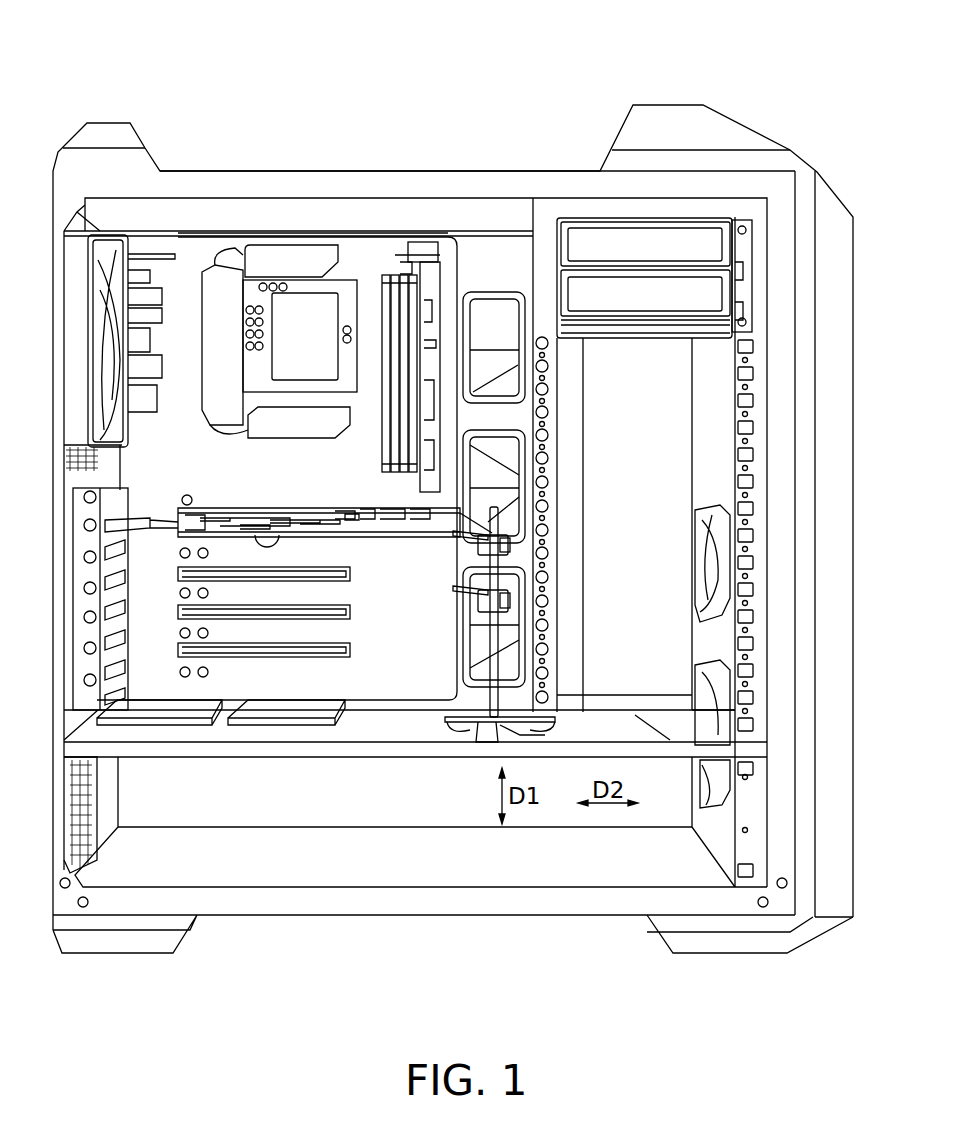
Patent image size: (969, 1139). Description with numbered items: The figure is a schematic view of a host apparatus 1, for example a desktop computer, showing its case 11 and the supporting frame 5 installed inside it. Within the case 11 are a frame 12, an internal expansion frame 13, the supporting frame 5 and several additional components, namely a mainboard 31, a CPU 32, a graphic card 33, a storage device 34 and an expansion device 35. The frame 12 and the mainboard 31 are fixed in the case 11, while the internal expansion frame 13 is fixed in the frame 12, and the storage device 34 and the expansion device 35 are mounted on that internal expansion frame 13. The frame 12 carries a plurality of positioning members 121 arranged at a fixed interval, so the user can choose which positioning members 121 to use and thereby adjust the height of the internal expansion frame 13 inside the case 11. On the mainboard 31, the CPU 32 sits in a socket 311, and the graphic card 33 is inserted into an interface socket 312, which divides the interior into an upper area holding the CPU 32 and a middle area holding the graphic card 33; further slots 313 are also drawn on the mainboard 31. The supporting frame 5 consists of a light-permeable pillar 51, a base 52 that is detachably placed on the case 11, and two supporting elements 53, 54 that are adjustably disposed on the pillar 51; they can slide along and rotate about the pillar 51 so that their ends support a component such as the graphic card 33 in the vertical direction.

The host apparatus 1 is at (170, 40).
The case 11 is at (218, 190).
The frame 12 is at (568, 468).
The positioning members 121 is at (548, 411).
The internal expansion frame 13 is at (745, 278).
The mainboard 31 is at (452, 255).
The socket 311 is at (352, 298).
The interface socket 312 is at (270, 510).
The expansion slots 313 is at (176, 575).
The CPU 32 is at (305, 300).
The graphic card 33 is at (352, 515).
The storage device 34 is at (597, 243).
The expansion device 35 is at (640, 300).
The supporting frame 5 is at (398, 548).
The light-permeable pillar 51 is at (486, 640).
The base 52 is at (452, 723).
The supporting element 53 is at (480, 543).
The supporting element 54 is at (480, 600).